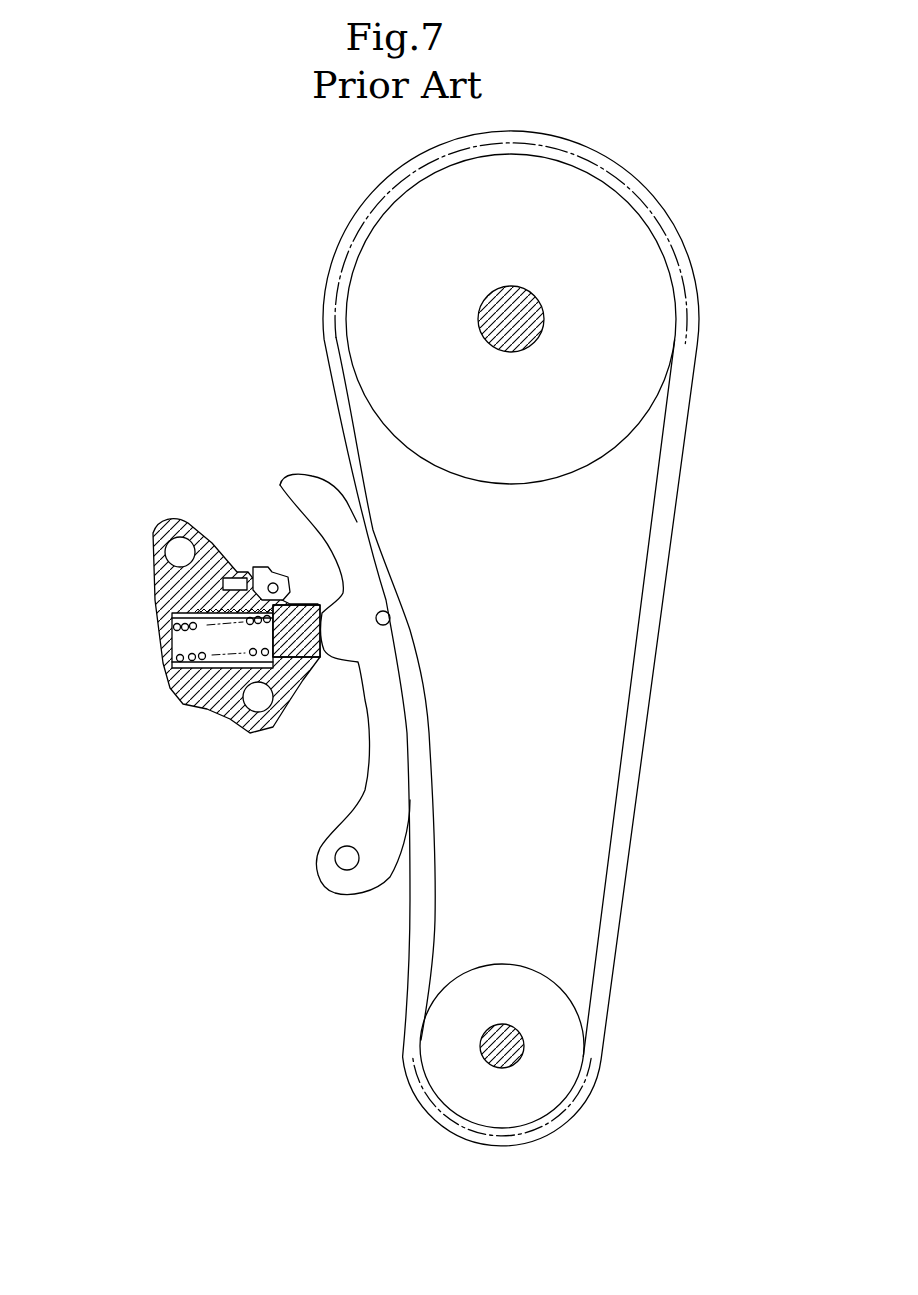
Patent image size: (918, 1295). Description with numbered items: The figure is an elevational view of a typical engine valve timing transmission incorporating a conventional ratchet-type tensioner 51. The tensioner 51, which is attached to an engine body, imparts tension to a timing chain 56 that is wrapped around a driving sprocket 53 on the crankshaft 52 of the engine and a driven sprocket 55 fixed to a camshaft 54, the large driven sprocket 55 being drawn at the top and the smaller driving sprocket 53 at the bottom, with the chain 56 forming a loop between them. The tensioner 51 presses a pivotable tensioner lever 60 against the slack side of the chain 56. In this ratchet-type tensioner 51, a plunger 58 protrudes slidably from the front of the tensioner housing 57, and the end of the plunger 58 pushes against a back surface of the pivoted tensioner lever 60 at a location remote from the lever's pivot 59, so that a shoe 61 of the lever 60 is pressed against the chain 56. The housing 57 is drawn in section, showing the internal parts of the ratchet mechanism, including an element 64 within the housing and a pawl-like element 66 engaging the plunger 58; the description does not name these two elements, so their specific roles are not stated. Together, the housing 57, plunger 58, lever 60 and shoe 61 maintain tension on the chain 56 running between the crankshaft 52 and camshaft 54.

The tensioner 51 is at (201, 604).
The crankshaft 52 is at (495, 1062).
The driving sprocket 53 is at (537, 1100).
The camshaft 54 is at (535, 322).
The driven sprocket 55 is at (630, 228).
The timing chain 56 is at (655, 577).
The tensioner housing 57 is at (150, 597).
The plunger 58 is at (306, 650).
The pivot 59 is at (340, 866).
The tensioner lever 60 is at (312, 486).
The shoe 61 is at (392, 627).
The spring 64 is at (170, 642).
The ratchet pawl 66 is at (260, 568).